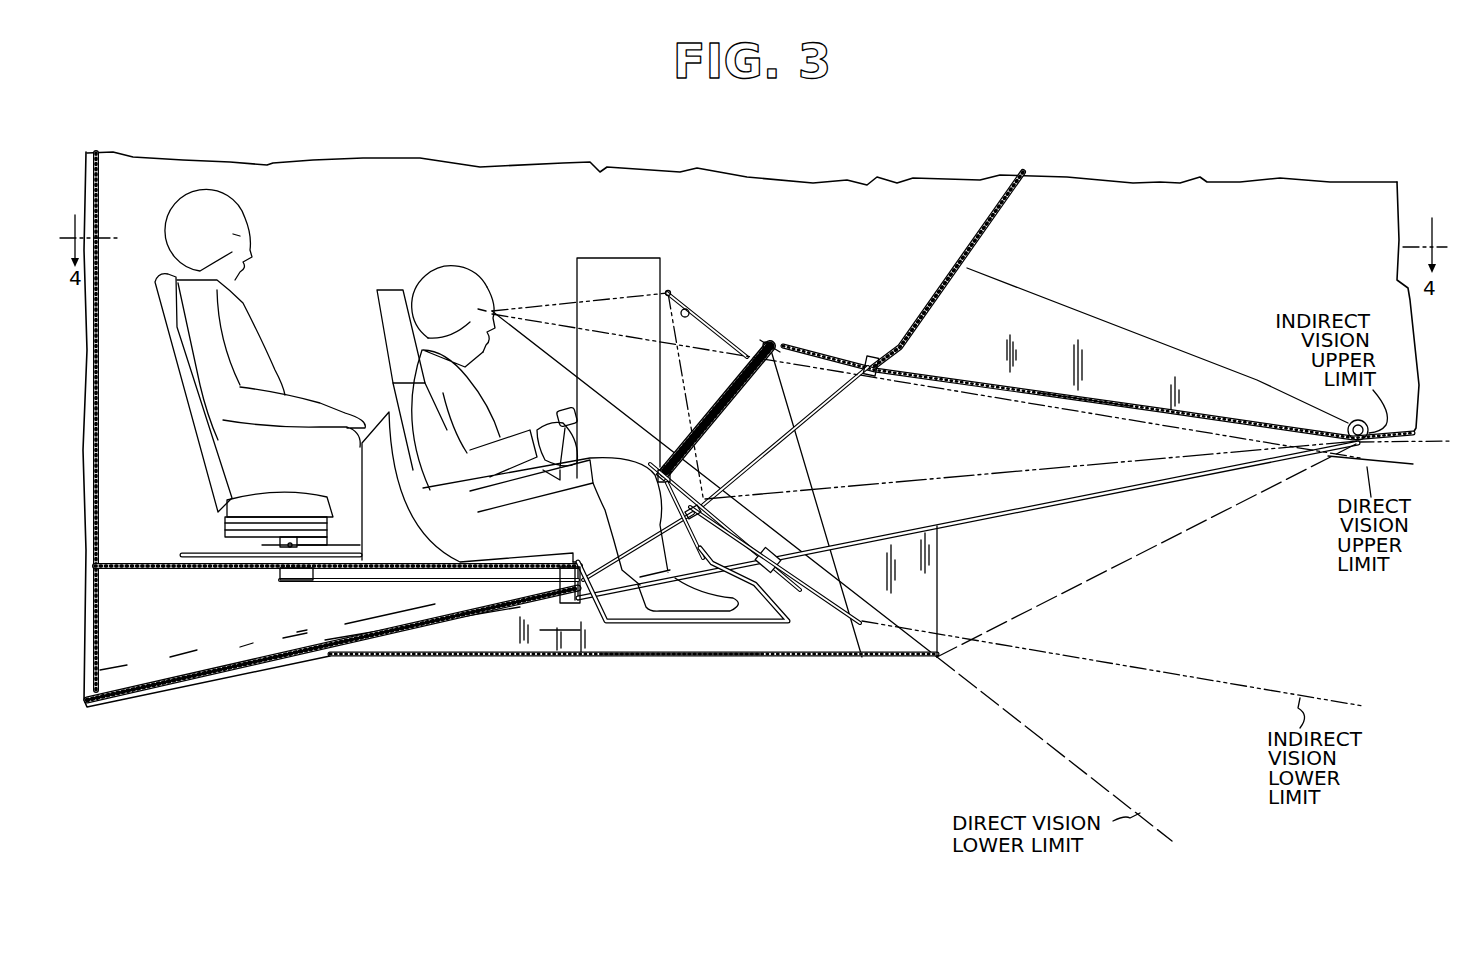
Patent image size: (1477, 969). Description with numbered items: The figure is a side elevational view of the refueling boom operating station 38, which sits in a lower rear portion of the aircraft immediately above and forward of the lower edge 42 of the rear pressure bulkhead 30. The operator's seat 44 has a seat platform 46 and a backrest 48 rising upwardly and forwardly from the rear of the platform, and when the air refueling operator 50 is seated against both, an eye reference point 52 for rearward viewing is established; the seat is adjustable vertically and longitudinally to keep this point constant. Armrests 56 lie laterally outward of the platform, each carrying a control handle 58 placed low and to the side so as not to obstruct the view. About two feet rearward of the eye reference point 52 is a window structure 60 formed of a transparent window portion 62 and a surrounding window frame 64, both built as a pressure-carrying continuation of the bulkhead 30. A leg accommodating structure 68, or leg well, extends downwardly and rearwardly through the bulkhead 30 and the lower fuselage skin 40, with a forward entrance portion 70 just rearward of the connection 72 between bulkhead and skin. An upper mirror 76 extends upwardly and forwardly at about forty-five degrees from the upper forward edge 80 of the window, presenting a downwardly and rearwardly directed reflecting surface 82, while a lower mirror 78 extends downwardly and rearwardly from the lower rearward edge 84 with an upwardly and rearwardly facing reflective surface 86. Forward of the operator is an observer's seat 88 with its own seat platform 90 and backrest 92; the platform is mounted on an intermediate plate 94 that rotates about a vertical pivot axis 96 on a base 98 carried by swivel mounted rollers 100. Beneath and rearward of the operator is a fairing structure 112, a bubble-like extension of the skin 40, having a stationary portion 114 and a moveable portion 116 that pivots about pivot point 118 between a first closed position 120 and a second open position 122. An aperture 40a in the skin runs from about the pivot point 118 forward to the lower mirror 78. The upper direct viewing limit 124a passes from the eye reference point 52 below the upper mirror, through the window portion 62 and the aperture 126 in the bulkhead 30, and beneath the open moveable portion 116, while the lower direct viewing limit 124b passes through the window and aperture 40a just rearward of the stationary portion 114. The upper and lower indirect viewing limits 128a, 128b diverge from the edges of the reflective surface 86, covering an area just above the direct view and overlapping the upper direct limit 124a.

The rear pressure bulkhead 30 is at (1000, 212).
The operating station 38 is at (502, 226).
The lower fuselage skin 40 is at (453, 630).
The aperture 40a is at (1141, 490).
The lower edge 42 is at (560, 610).
The operator's seat 44 is at (427, 578).
The seat platform 46 is at (508, 567).
The backrest 48 is at (388, 330).
The air refueling operator 50 is at (477, 410).
The eye reference point 52 is at (493, 303).
The armrest 56 is at (520, 487).
The control handle 58 is at (591, 413).
The window structure 60 is at (771, 372).
The transparent window portion 62 is at (722, 412).
The window frame 64 is at (784, 347).
The leg accommodating structure 68 is at (632, 627).
The forward entrance portion 70 is at (616, 562).
The connection 72 is at (520, 633).
The upper mirror 76 is at (713, 317).
The lower mirror 78 is at (770, 531).
The upper forward edge 80 is at (763, 343).
The reflecting surface 82 is at (685, 310).
The lower rearward edge 84 is at (667, 453).
The reflective surface 86 is at (756, 510).
The observer's seat 88 is at (228, 505).
The seat platform 90 is at (245, 553).
The backrest 92 is at (190, 413).
The intermediate plate 94 is at (317, 518).
The vertical pivot axis 96 is at (277, 505).
The base 98 is at (318, 535).
The swivel mounted roller 100 is at (290, 547).
The fairing structure 112 is at (749, 665).
The stationary portion 114 is at (686, 658).
The moveable portion 116 is at (1088, 401).
The pivot point 118 is at (1369, 428).
The first closed position 120 is at (1180, 530).
The second open position 122 is at (1100, 330).
The upper direct viewing limit 124a is at (1193, 430).
The lower direct viewing limit 124b is at (1012, 715).
The aperture 126 is at (853, 393).
The upper limit of indirect viewing area 128a is at (980, 480).
The lower limit of indirect viewing area 128b is at (1167, 673).